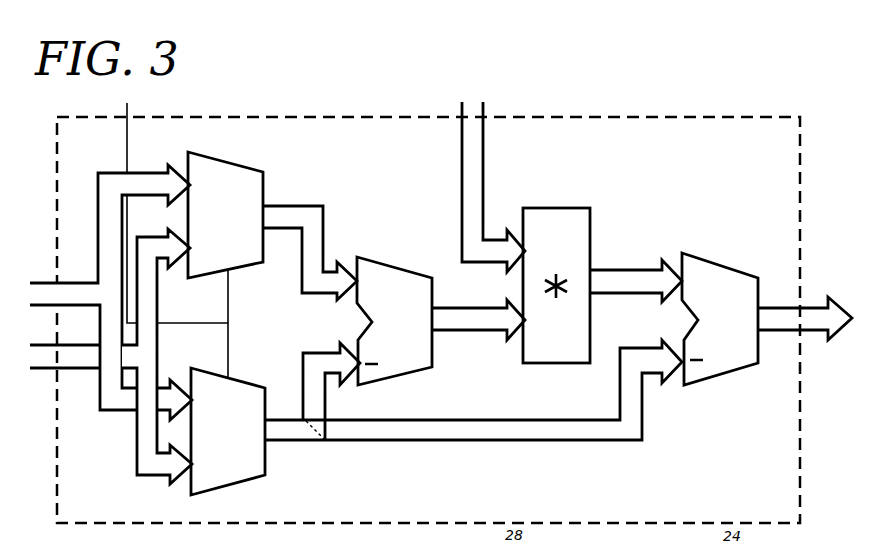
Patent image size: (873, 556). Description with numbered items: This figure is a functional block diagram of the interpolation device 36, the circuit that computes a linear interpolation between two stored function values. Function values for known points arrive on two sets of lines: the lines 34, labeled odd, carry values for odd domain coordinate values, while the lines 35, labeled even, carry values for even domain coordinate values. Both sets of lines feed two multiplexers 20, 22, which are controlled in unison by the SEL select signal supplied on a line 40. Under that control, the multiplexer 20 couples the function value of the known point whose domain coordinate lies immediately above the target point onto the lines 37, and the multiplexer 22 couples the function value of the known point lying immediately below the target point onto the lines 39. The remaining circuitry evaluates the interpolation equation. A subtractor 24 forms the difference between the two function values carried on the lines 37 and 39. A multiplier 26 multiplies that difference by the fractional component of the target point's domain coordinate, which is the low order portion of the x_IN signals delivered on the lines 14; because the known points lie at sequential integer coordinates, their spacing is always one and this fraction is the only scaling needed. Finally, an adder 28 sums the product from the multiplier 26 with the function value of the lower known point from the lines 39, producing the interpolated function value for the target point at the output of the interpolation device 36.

The lines carrying the low order portion of the x_IN signals 14 is at (486, 107).
The multiplexer 20 is at (247, 266).
The multiplexer 22 is at (240, 380).
The subtractor 24 is at (394, 268).
The multiplier 26 is at (556, 208).
The adder 28 is at (712, 262).
The lines 34 is at (50, 368).
The lines 35 is at (47, 283).
The interpolation device 36 is at (674, 117).
The lines 37 is at (300, 205).
The lines 39 is at (287, 418).
The line 40 is at (130, 110).